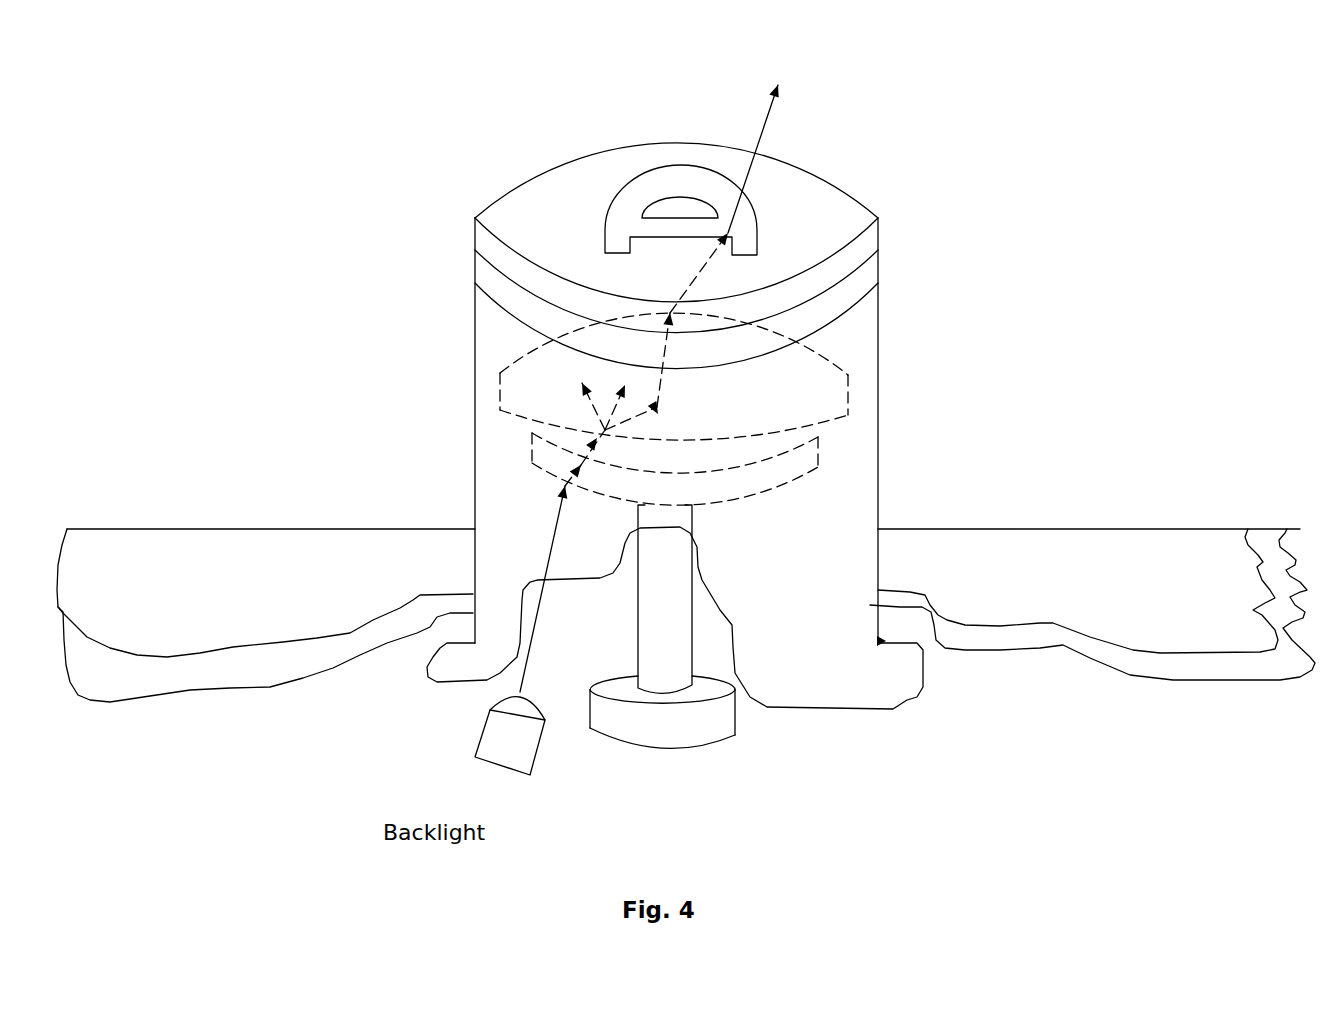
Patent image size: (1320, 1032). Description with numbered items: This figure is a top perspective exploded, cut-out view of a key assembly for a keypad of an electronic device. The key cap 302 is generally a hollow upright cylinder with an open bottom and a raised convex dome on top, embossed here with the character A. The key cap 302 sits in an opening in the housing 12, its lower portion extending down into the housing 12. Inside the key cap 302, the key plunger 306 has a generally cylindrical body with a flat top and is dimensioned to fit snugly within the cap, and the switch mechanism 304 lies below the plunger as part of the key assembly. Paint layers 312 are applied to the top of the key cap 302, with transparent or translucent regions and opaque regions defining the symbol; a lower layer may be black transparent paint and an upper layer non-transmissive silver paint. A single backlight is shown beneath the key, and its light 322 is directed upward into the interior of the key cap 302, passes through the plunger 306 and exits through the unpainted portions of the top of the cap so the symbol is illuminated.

The housing 12 is at (1047, 557).
The key cap 302 is at (867, 437).
The paint layers 312 is at (870, 275).
The key plunger 306 is at (663, 551).
The switch mechanism 304 is at (722, 727).
The light 322 is at (721, 261).